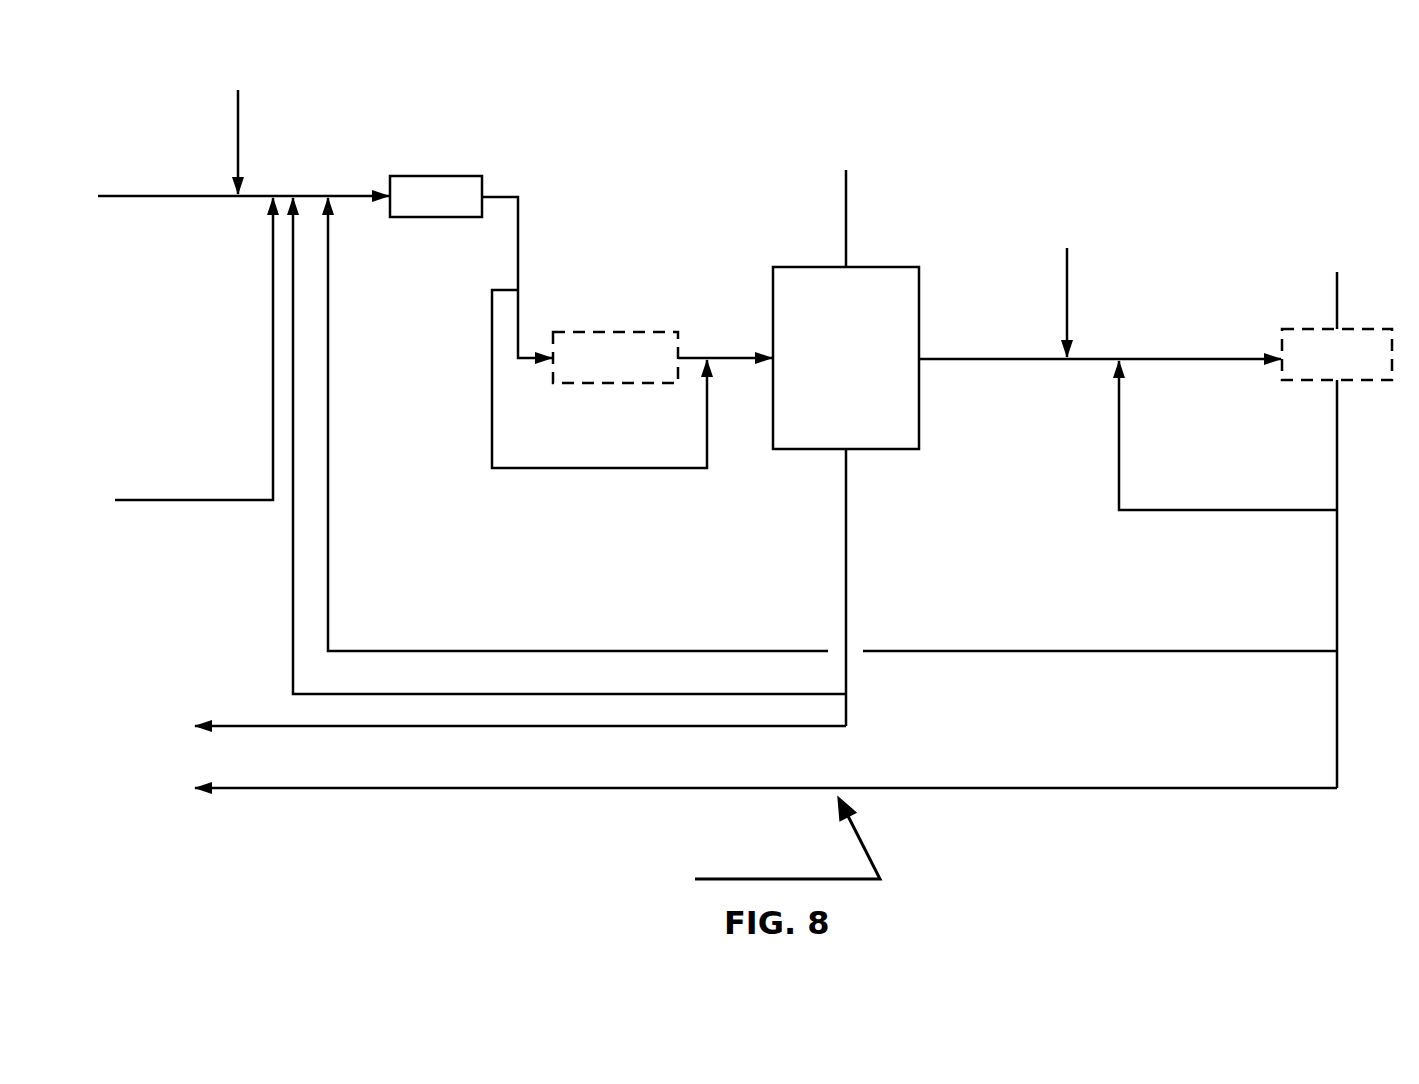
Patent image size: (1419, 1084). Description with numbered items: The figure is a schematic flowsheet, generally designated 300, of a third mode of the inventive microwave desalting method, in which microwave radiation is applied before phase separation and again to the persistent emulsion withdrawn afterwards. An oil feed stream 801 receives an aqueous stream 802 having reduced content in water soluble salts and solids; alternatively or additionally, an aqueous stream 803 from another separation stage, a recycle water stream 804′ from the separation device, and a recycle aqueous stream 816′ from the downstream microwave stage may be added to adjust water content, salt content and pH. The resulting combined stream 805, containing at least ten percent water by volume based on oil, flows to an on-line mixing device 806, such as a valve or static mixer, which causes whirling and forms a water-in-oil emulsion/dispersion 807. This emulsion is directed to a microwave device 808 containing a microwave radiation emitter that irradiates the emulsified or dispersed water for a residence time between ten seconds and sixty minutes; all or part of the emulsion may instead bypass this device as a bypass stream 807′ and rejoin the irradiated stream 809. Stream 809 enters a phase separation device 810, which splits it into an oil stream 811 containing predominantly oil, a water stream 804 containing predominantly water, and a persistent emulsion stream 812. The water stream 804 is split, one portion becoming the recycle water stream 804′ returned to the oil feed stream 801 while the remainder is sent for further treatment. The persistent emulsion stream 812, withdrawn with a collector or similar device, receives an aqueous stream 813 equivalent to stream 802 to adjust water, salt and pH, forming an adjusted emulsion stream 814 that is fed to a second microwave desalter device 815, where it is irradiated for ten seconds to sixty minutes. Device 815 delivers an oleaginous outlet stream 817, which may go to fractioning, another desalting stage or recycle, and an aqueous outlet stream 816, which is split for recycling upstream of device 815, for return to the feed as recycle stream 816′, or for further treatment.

The flowsheet 300 is at (787, 838).
The oil feed stream 801 is at (137, 194).
The aqueous stream 802 is at (235, 133).
The aqueous stream 803 is at (265, 404).
The water stream 804 is at (830, 557).
The recycle water stream 804′ is at (283, 558).
The combined stream 805 is at (363, 192).
The on-line mixing device 806 is at (450, 147).
The water-in-oil emulsion/dispersion 807 is at (530, 227).
The bypass stream 807′ is at (553, 470).
The microwave device 808 is at (618, 330).
The irradiated stream 809 is at (743, 350).
The phase separation device 810 is at (780, 258).
The oil stream 811 is at (1080, 162).
The persistent emulsion stream 812 is at (980, 362).
The aqueous stream 813 is at (1055, 281).
The adjusted emulsion stream 814 is at (1148, 352).
The microwave desalter device 815 is at (1285, 329).
The aqueous outlet stream 816 is at (1340, 418).
The recycle aqueous stream 816′ is at (1060, 658).
The oleaginous outlet stream 817 is at (1401, 265).